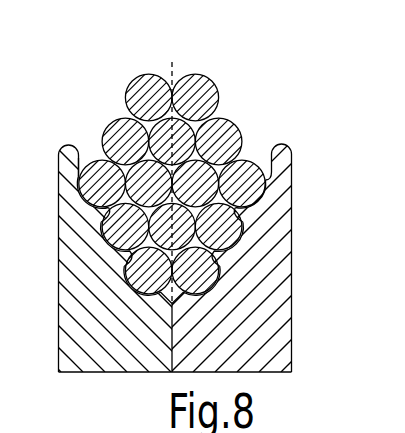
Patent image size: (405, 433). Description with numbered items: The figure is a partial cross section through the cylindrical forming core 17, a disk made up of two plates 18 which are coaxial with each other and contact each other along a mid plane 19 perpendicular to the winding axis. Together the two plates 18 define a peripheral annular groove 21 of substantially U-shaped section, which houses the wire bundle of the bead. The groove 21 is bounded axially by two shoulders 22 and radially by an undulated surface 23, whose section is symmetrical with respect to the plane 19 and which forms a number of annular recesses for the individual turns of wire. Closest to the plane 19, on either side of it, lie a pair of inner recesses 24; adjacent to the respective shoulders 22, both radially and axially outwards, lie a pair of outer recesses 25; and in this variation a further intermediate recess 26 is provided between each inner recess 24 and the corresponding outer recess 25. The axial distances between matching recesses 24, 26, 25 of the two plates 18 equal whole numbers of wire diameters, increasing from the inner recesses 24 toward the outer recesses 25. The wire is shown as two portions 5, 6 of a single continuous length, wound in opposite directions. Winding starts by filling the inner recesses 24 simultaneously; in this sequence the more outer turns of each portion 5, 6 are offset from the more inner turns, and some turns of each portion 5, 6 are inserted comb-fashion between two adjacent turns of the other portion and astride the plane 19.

The portion of wire length 5 is at (146, 65).
The portion of wire length 6 is at (223, 77).
The mid plane 19 is at (172, 77).
The peripheral annular groove 21 is at (80, 157).
The shoulder 22 is at (62, 162).
The undulated surface 23 is at (244, 152).
The inner recess 24 is at (140, 265).
The outer recess 25 is at (85, 183).
The intermediate recess 26 is at (108, 214).
The plate 18 is at (80, 344).
The cylindrical forming core 17 is at (142, 377).